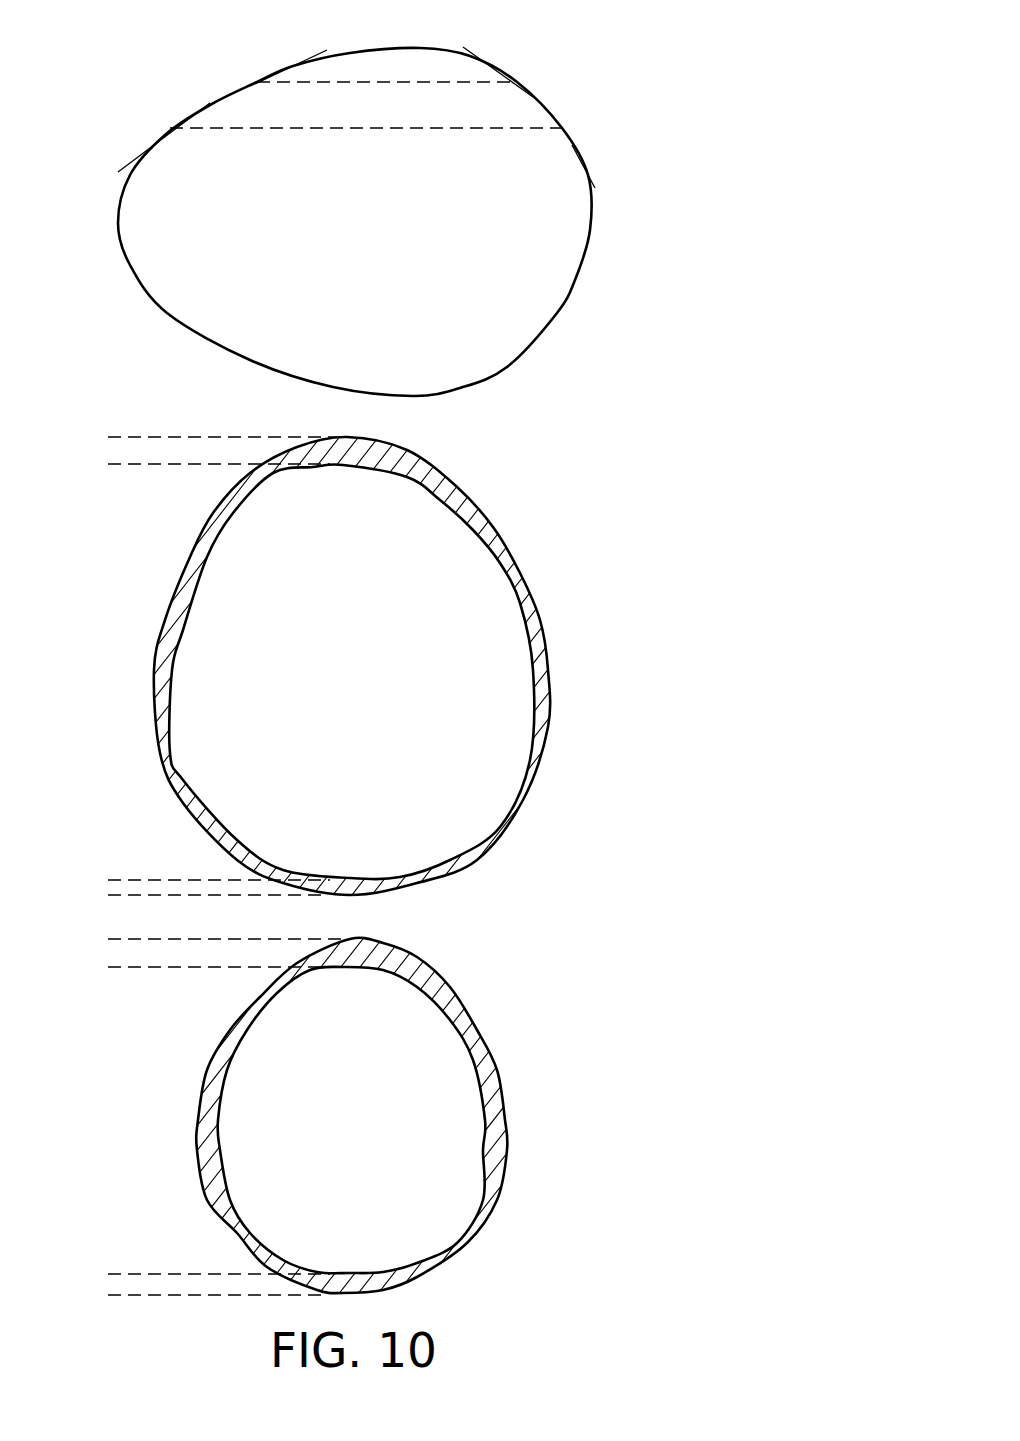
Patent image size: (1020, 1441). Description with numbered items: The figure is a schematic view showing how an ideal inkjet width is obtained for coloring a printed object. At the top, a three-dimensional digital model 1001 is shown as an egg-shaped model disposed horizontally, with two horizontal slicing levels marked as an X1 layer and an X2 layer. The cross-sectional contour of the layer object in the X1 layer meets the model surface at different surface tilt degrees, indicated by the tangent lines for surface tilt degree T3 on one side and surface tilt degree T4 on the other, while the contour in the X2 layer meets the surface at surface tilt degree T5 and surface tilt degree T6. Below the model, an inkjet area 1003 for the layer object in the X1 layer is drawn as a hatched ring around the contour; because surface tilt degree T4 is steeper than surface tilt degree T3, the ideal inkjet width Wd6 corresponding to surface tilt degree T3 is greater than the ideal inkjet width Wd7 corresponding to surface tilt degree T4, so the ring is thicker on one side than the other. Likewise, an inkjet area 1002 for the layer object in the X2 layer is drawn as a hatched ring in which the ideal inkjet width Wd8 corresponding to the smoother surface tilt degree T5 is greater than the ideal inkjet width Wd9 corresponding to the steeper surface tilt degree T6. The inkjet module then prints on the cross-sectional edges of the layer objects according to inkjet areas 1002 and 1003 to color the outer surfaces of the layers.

The three-dimensional digital model 1001 is at (583, 26).
The inkjet area 1002 is at (582, 470).
The inkjet area 1003 is at (582, 952).
The surface tilt degree T3 is at (293, 66).
The surface tilt degree T4 is at (487, 60).
The surface tilt degree T5 is at (165, 135).
The surface tilt degree T6 is at (587, 168).
The X1 layer X1 is at (517, 82).
The X2 layer X2 is at (562, 128).
The ideal inkjet width Wd6 is at (129, 454).
The ideal inkjet width Wd7 is at (125, 860).
The ideal inkjet width Wd8 is at (129, 957).
The ideal inkjet width Wd9 is at (125, 1253).